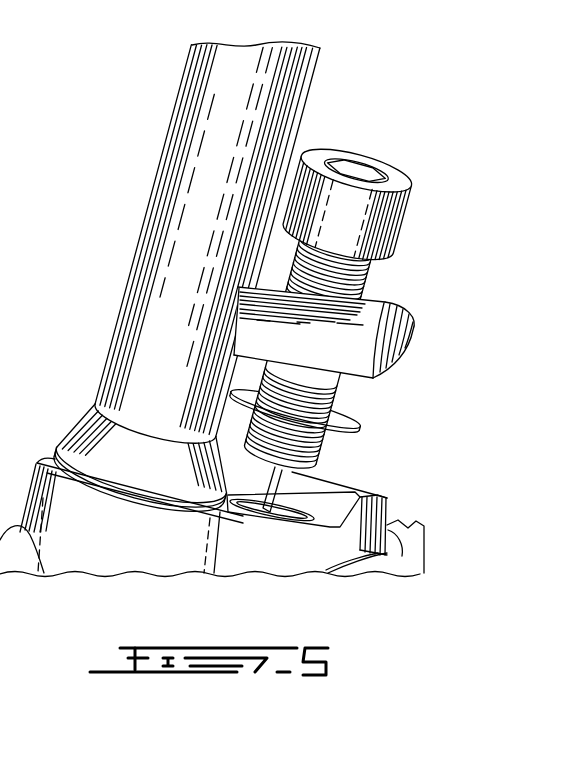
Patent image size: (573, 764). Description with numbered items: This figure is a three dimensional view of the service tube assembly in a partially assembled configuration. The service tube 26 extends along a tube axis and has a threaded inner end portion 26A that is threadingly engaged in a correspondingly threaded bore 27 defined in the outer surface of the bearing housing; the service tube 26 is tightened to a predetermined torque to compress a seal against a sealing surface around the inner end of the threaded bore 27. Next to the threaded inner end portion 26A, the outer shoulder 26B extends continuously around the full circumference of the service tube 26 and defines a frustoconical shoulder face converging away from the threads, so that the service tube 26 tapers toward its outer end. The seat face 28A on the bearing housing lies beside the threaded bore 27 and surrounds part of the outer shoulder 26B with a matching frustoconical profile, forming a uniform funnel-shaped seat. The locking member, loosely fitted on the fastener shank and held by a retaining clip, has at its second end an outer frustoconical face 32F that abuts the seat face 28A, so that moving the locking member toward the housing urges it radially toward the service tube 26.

The service tube 26 is at (121, 236).
The outer shoulder 26B is at (78, 440).
The threaded bore 27 is at (52, 513).
The threaded inner end portion 26A is at (52, 513).
The seat face 28A is at (317, 492).
The outer frustoconical face 32F is at (394, 366).